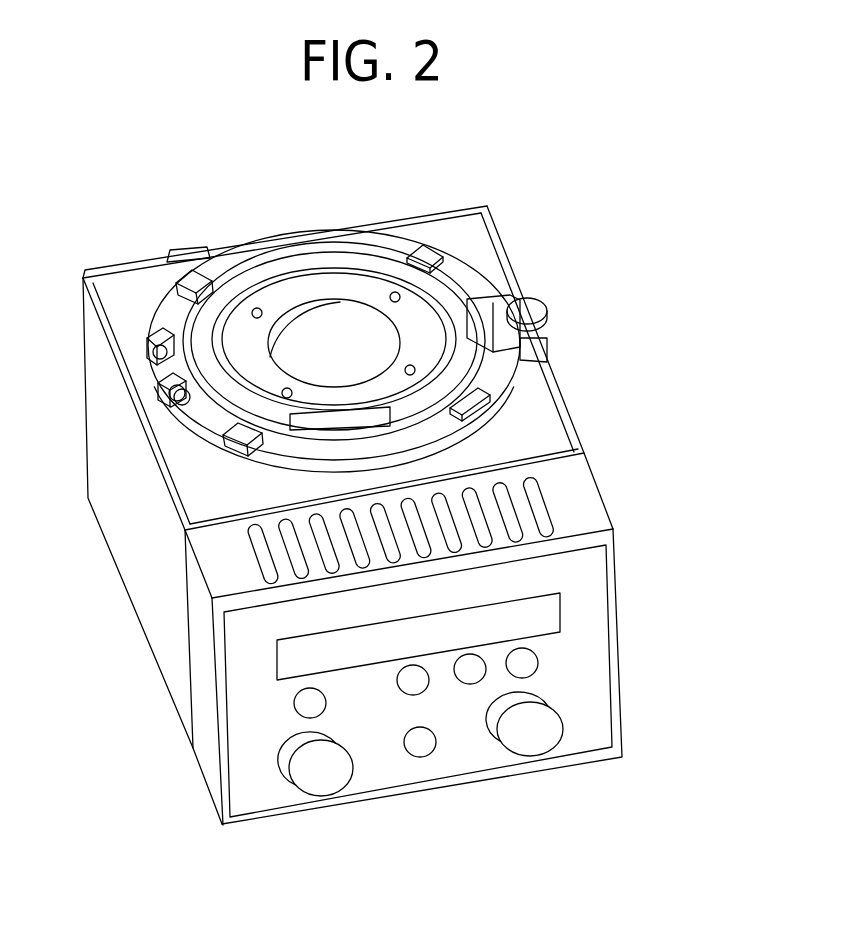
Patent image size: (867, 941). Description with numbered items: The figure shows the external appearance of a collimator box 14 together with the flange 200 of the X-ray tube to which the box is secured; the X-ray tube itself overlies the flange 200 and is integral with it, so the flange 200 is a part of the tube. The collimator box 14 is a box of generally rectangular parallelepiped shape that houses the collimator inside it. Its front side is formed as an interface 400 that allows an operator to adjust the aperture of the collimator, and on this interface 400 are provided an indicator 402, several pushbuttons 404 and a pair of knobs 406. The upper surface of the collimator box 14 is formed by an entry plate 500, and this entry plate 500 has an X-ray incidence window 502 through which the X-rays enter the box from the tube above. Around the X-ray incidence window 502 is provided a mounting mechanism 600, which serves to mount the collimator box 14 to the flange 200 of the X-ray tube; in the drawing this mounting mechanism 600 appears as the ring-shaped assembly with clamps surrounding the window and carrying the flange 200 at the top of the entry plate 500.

The collimator box 14 is at (360, 165).
The mounting mechanism 600 is at (404, 190).
The entry plate 500 is at (143, 303).
The X-ray incidence window 502 is at (327, 323).
The flange 200 is at (430, 308).
The interface 400 is at (593, 679).
The indicator 402 is at (560, 607).
The pushbuttons 404 is at (530, 660).
The knobs 406 is at (550, 733).